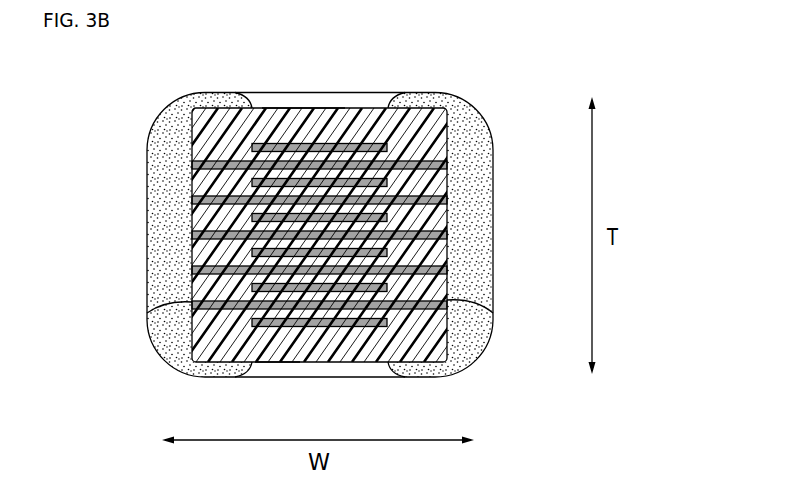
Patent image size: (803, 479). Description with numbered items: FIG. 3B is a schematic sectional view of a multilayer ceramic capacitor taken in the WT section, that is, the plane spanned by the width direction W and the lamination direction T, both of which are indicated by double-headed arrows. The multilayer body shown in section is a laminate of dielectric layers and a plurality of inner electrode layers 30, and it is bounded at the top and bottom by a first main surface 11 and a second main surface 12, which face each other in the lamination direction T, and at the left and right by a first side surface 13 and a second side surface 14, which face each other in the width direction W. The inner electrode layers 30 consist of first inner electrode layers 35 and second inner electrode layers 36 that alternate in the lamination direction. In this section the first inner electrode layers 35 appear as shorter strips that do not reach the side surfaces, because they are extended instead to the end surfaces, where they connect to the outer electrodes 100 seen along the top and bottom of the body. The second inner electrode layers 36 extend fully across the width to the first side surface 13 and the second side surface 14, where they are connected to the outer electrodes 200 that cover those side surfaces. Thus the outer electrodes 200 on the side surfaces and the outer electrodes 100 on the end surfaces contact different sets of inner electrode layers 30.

The outer electrode 100 is at (347, 98).
The outer electrode 200 is at (163, 190).
The inner electrode layer 30 is at (331, 284).
The first inner electrode layer 35 is at (335, 324).
The second inner electrode layer 36 is at (367, 270).
The first main surface 11 is at (303, 106).
The second main surface 12 is at (262, 366).
The first side surface 13 is at (147, 313).
The second side surface 14 is at (493, 313).